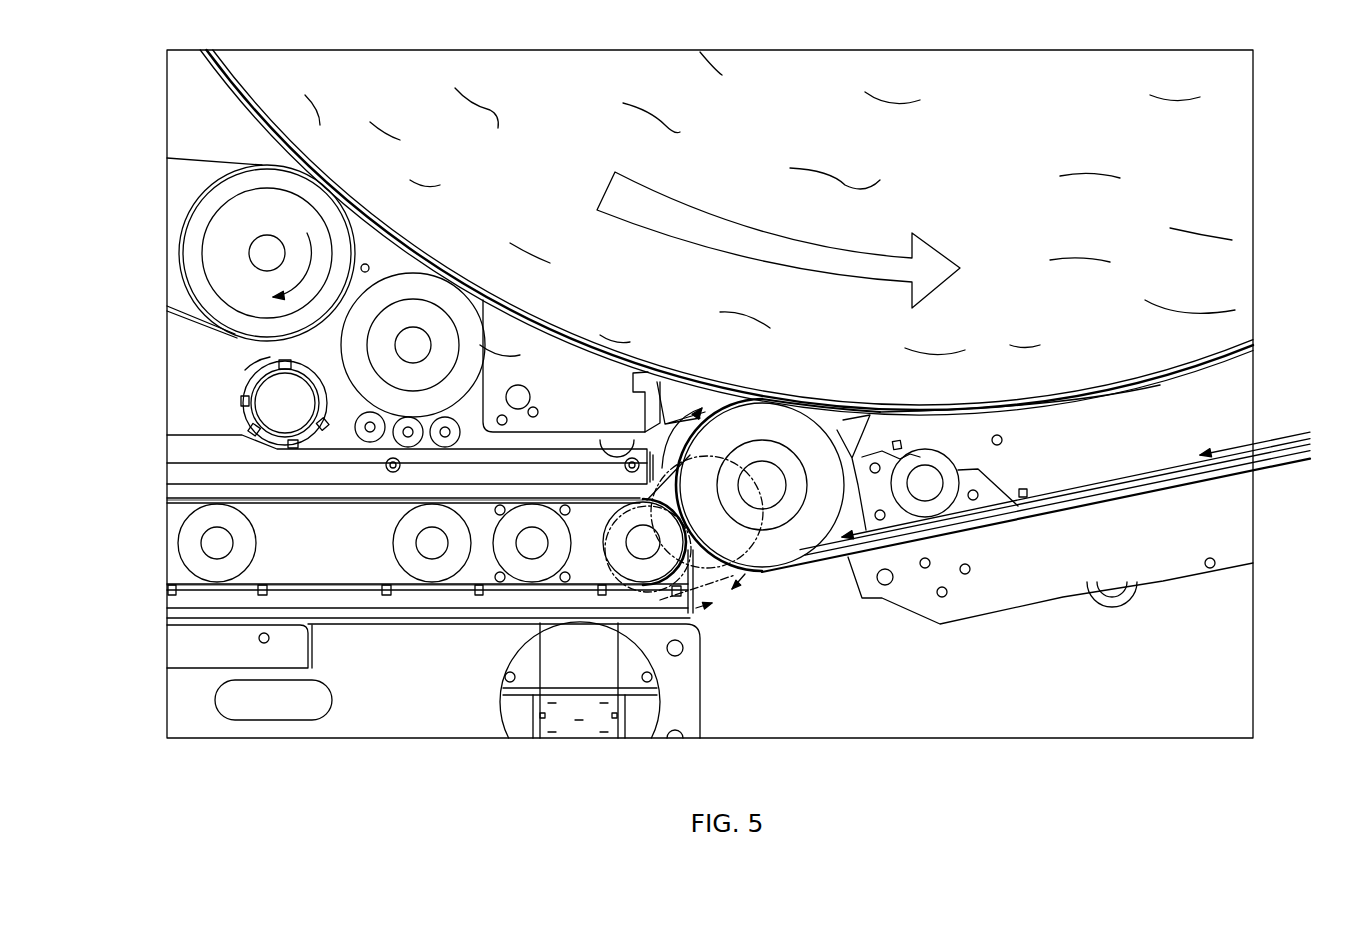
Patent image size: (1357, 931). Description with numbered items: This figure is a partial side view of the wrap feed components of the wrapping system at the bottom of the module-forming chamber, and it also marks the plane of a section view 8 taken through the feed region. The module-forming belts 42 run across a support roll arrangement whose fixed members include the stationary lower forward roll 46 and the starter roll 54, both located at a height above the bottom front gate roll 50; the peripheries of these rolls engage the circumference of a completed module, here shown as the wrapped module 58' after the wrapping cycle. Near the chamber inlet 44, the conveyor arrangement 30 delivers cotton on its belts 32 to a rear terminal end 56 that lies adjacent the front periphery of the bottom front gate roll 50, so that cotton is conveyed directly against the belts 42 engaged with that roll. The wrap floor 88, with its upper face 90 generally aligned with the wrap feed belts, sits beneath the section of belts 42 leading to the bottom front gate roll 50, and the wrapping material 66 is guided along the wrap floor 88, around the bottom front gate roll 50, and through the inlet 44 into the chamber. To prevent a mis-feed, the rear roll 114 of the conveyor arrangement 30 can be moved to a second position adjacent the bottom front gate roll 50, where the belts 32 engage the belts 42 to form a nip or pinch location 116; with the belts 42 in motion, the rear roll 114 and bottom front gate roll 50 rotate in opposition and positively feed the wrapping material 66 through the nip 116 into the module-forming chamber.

The conveyor arrangement 30 is at (157, 543).
The belts 32 is at (182, 498).
The belts 42 is at (1158, 386).
The inlet 44 is at (545, 365).
The lower forward roll 46 is at (295, 202).
The bottom front gate roll 50 is at (780, 425).
The starter roll 54 is at (407, 288).
The rear terminal end 56 is at (677, 568).
The wrapped module 58' is at (726, 232).
The wrapping material 66 is at (1272, 460).
The wrap floor 88 is at (838, 602).
The upper face 90 is at (1165, 466).
The rear roll 114 is at (607, 548).
The nip or pinch location 116 is at (672, 508).
The section line 8- 8 is at (710, 606).